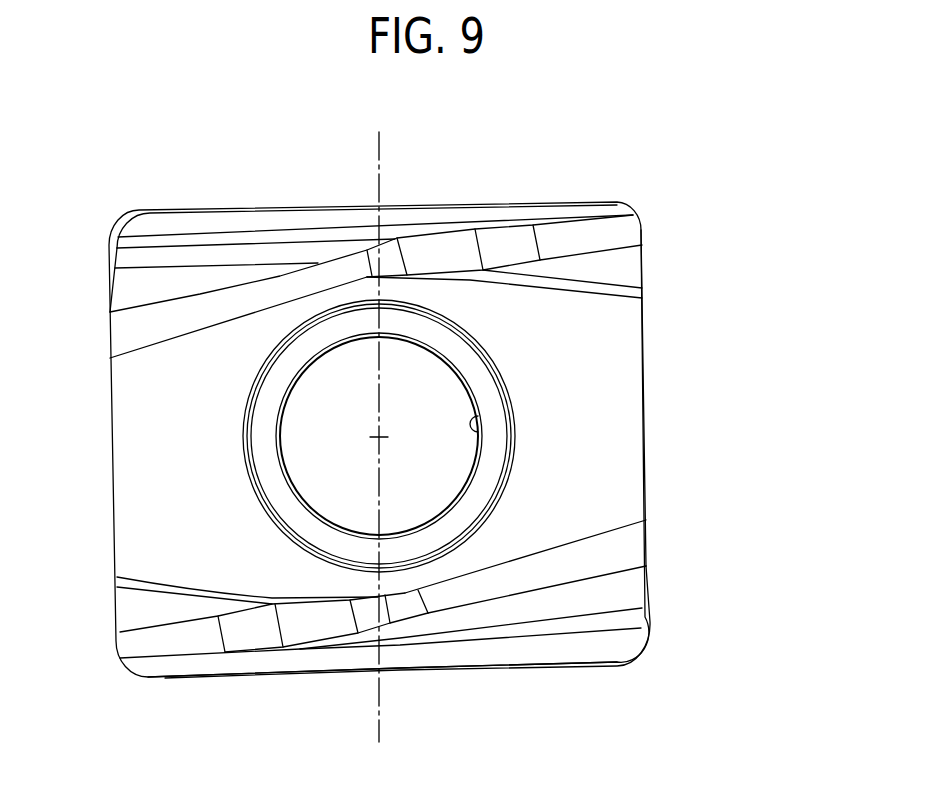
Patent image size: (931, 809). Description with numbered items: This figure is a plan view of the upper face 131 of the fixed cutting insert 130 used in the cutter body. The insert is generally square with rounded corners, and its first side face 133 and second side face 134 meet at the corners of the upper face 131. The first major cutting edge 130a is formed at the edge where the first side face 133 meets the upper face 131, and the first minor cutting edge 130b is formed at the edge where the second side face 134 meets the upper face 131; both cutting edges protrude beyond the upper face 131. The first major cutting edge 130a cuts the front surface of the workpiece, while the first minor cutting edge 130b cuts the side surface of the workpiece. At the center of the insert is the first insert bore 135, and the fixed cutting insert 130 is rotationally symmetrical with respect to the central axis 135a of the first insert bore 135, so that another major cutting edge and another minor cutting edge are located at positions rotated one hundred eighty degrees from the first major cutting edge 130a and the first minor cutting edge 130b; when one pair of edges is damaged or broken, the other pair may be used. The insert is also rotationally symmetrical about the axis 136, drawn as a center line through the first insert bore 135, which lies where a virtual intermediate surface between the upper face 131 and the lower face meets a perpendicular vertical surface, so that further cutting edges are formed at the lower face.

The fixed cutting insert 130 is at (590, 126).
The first major cutting edge 130a is at (518, 667).
The first minor cutting edge 130b is at (643, 621).
The upper face 131 is at (573, 302).
The first side face 133 is at (355, 684).
The second side face 134 is at (666, 480).
The first insert bore 135 is at (480, 434).
The central axis of the first insert bore 135a is at (381, 437).
The axis 136 is at (380, 148).